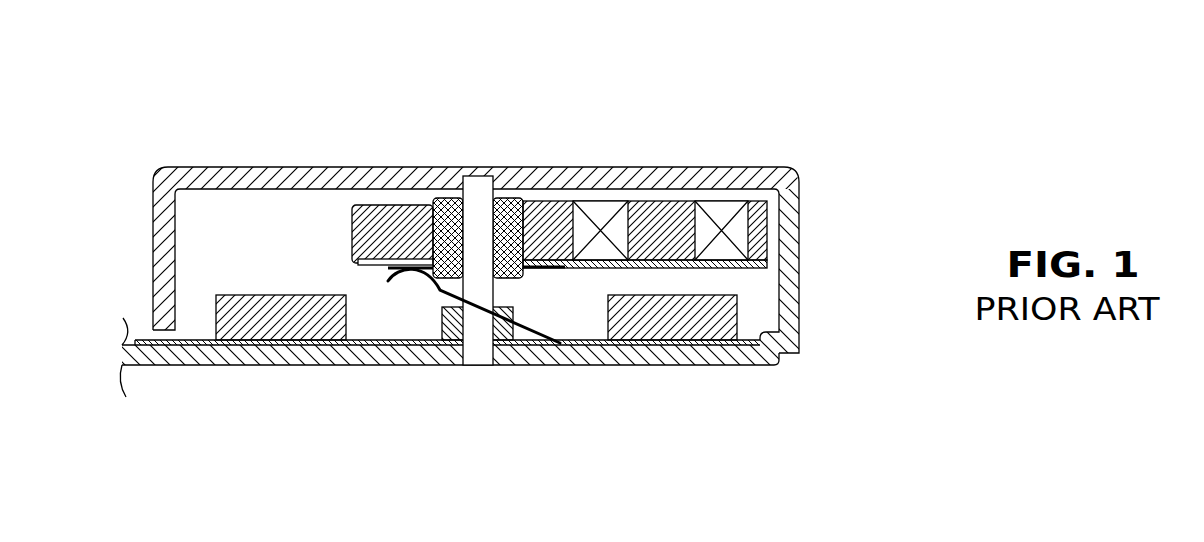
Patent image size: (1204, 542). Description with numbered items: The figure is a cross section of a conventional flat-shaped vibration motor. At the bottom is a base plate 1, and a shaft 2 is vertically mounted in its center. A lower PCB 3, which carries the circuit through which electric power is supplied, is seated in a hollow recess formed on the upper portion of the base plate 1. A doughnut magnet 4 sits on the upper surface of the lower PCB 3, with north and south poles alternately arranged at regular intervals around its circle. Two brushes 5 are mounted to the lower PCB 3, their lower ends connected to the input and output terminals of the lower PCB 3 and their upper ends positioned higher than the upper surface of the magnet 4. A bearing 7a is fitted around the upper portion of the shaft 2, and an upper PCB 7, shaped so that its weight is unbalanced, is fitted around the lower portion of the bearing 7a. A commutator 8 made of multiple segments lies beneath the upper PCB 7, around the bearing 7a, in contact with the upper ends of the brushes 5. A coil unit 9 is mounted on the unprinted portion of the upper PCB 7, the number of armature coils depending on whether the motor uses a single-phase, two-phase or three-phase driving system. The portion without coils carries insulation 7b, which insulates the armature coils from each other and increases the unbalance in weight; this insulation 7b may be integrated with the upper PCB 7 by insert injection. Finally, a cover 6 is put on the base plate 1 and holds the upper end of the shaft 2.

The base plate 1 is at (245, 355).
The shaft 2 is at (478, 358).
The lower PCB 3 is at (383, 338).
The doughnut magnet 4 is at (680, 330).
The brushes 5 is at (397, 273).
The cover 6 is at (318, 168).
The upper PCB 7 is at (657, 267).
The bearing 7a is at (510, 200).
The insulation 7b is at (668, 210).
The commutator 8 is at (545, 272).
The coil unit 9 is at (603, 208).